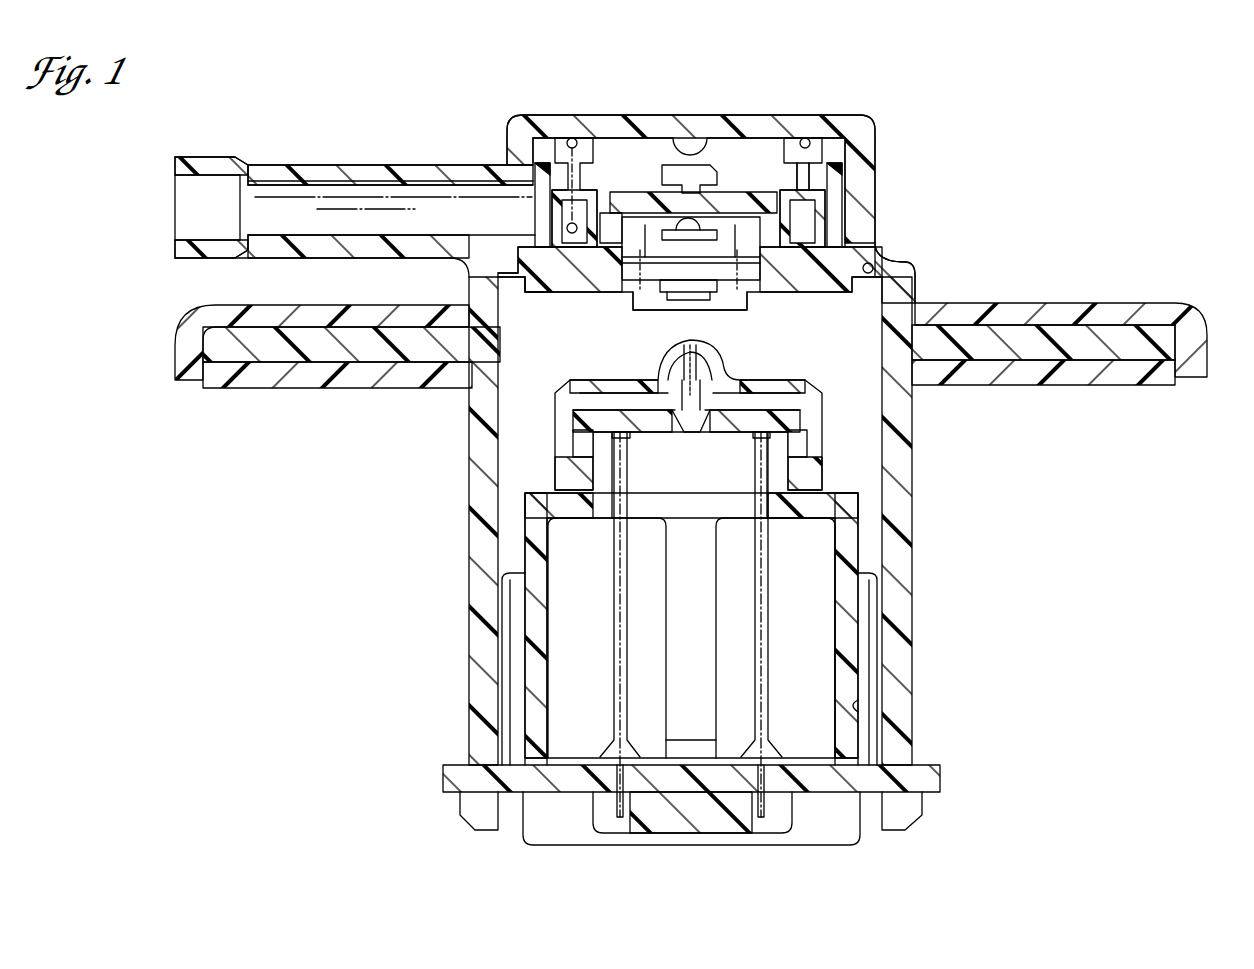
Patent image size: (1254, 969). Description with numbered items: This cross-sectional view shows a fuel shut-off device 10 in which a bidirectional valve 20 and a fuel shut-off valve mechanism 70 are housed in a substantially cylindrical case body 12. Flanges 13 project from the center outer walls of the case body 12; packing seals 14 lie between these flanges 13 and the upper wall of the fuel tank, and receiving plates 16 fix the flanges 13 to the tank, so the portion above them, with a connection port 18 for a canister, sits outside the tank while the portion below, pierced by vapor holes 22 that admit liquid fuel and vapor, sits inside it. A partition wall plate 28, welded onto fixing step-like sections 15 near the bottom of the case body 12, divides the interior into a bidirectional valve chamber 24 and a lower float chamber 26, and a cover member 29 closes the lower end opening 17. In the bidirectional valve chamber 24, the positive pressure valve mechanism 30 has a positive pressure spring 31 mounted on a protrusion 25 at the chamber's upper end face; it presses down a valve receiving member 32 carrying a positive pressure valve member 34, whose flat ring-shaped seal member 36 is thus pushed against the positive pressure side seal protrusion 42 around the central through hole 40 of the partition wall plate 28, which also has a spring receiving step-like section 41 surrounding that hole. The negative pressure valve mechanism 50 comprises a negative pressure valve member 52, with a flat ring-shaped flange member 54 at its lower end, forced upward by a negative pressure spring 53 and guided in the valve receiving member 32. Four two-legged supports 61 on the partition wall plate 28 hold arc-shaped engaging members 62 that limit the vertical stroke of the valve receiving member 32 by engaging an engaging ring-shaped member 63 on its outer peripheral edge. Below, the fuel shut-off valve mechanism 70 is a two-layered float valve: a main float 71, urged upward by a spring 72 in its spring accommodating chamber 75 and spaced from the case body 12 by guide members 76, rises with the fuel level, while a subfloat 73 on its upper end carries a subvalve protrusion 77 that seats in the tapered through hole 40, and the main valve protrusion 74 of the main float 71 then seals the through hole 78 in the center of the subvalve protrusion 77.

The fuel shut-off device 10 is at (960, 120).
The case body 12 is at (900, 460).
The flanges 13 is at (323, 370).
The packing seals 14 is at (1060, 378).
The fixing step-like sections 15 is at (873, 266).
The receiving plates 16 is at (1080, 305).
The lower end opening 17 is at (895, 815).
The connection port 18 is at (282, 168).
The bidirectional valve 20 is at (691, 160).
The vapor holes 22 is at (900, 408).
The bidirectional valve chamber 24 is at (660, 150).
The protrusion 25 is at (582, 175).
The lower float chamber 26 is at (505, 445).
The partition wall plate 28 is at (880, 290).
The cover member 29 is at (820, 785).
The positive pressure valve mechanism 30 is at (850, 172).
The positive pressure spring 31 is at (560, 160).
The valve receiving member 32 is at (605, 200).
The positive pressure valve member 34 is at (622, 205).
The seal member 36 is at (553, 258).
The through hole 40 is at (720, 302).
The spring receiving step-like section 41 is at (660, 278).
The positive pressure side seal protrusion 42 is at (578, 270).
The negative pressure valve mechanism 50 is at (632, 242).
The negative pressure valve member 52 is at (705, 180).
The negative pressure spring 53 is at (735, 270).
The flange member 54 is at (745, 258).
The two-legged supports 61 is at (840, 215).
The arc-shaped engaging members 62 is at (540, 165).
The engaging ring-shaped member 63 is at (830, 195).
The fuel shut-off valve mechanism 70 is at (701, 595).
The main float 71 is at (848, 610).
The spring 72 is at (640, 800).
The subfloat 73 is at (820, 470).
The main valve protrusion 74 is at (682, 378).
The spring accommodating chamber 75 is at (863, 705).
The guide members 76 is at (875, 655).
The subvalve protrusion 77 is at (735, 372).
The through hole 78 is at (697, 352).